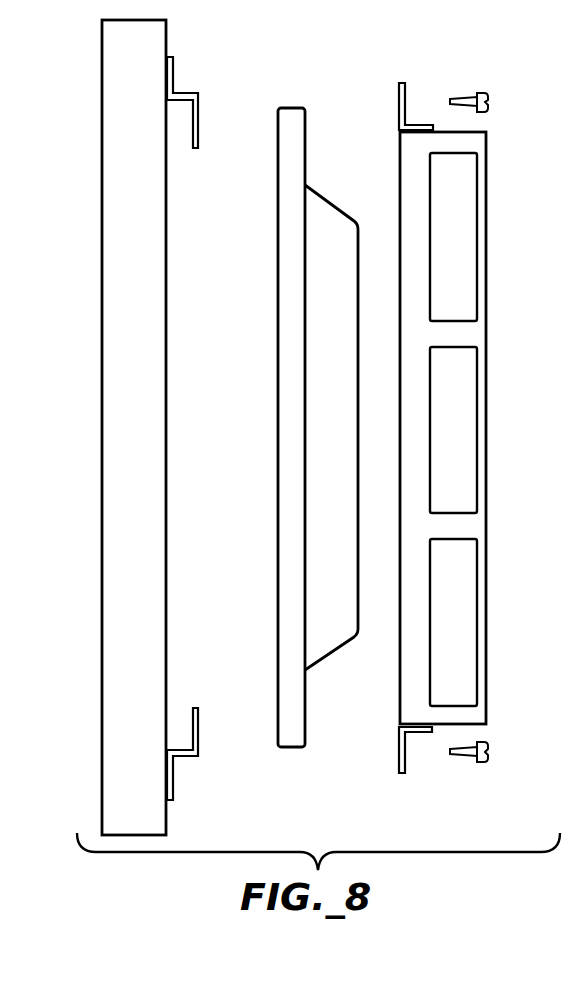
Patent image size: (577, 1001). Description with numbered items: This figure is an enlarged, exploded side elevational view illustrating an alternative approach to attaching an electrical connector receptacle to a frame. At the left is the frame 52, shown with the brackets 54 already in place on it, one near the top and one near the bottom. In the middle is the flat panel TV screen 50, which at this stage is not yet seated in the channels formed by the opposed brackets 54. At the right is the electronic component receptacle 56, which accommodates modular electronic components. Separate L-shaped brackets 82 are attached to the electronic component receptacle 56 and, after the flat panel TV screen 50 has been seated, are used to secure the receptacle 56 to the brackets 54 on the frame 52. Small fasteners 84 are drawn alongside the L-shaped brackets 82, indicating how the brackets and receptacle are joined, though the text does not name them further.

The flat panel TV screen 50 is at (290, 112).
The frame 52 is at (118, 97).
The brackets 54 is at (200, 110).
The electronic component receptacle 56 is at (486, 454).
The L-shaped brackets 82 is at (408, 92).
The screw 84 is at (492, 99).